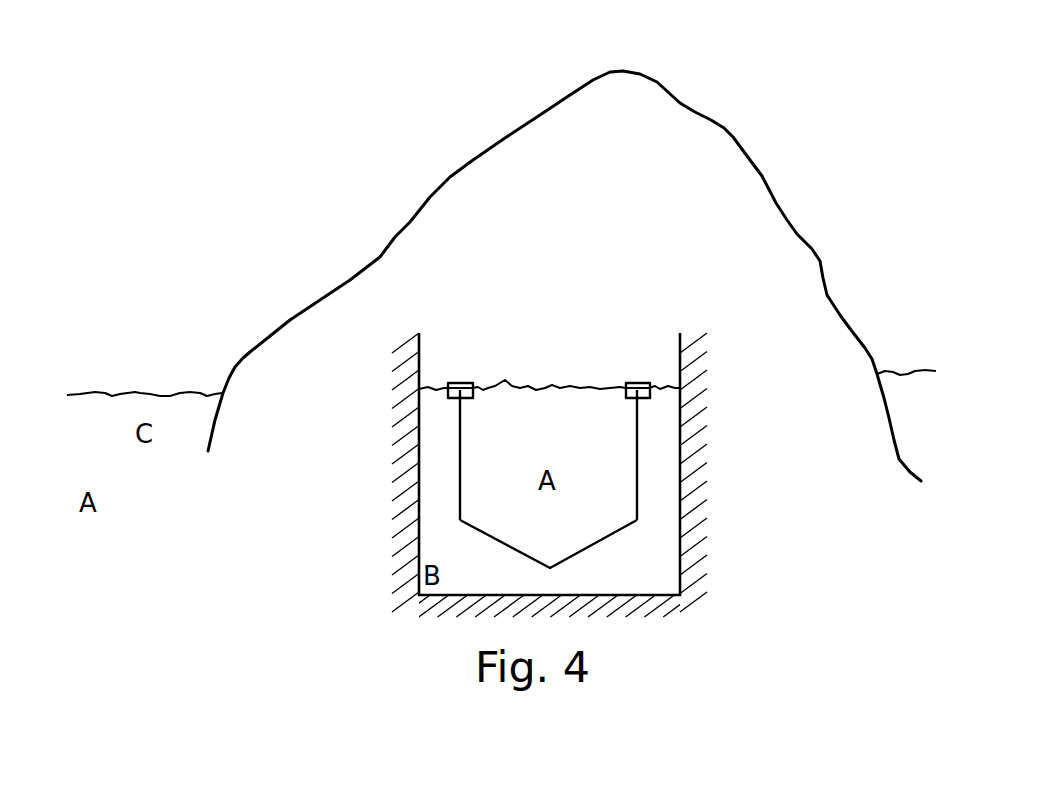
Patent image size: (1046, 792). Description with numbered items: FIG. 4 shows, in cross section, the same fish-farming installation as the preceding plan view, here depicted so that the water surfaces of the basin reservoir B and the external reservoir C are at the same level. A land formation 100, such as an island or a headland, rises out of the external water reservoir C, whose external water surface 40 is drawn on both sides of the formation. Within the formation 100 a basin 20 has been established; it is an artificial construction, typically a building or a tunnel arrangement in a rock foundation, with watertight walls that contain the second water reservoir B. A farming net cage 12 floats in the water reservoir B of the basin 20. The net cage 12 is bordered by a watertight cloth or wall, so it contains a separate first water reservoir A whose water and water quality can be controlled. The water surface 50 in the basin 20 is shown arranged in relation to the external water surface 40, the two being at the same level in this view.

The land formation 100 is at (727, 237).
The external water surface 40 is at (140, 394).
The basin 20 is at (668, 544).
The farming net cage 12 is at (617, 423).
The water surface in the basin 50 is at (665, 387).